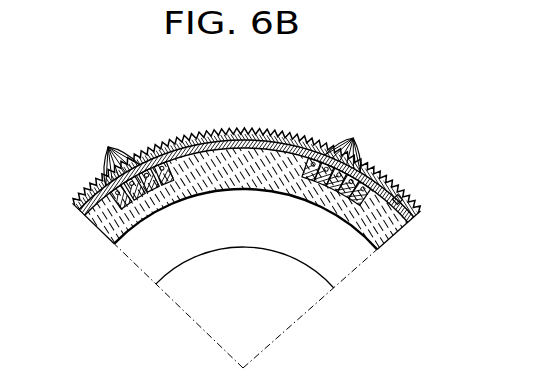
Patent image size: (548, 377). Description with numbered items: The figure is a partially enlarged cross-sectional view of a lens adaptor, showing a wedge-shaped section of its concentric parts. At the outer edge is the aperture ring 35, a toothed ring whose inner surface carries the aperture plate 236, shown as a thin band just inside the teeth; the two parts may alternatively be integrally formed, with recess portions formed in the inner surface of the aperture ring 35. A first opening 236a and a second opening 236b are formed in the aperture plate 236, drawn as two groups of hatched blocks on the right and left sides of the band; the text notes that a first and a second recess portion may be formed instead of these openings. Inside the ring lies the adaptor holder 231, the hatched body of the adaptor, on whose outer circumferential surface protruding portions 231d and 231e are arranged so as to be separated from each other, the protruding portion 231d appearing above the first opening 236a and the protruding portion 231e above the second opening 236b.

The aperture ring 35 is at (183, 137).
The adaptor holder 231 is at (263, 158).
The aperture plate 236 is at (223, 143).
The first opening 236a is at (323, 152).
The second opening 236b is at (168, 158).
The protruding portion 231d is at (362, 129).
The protruding portion 231e is at (106, 146).